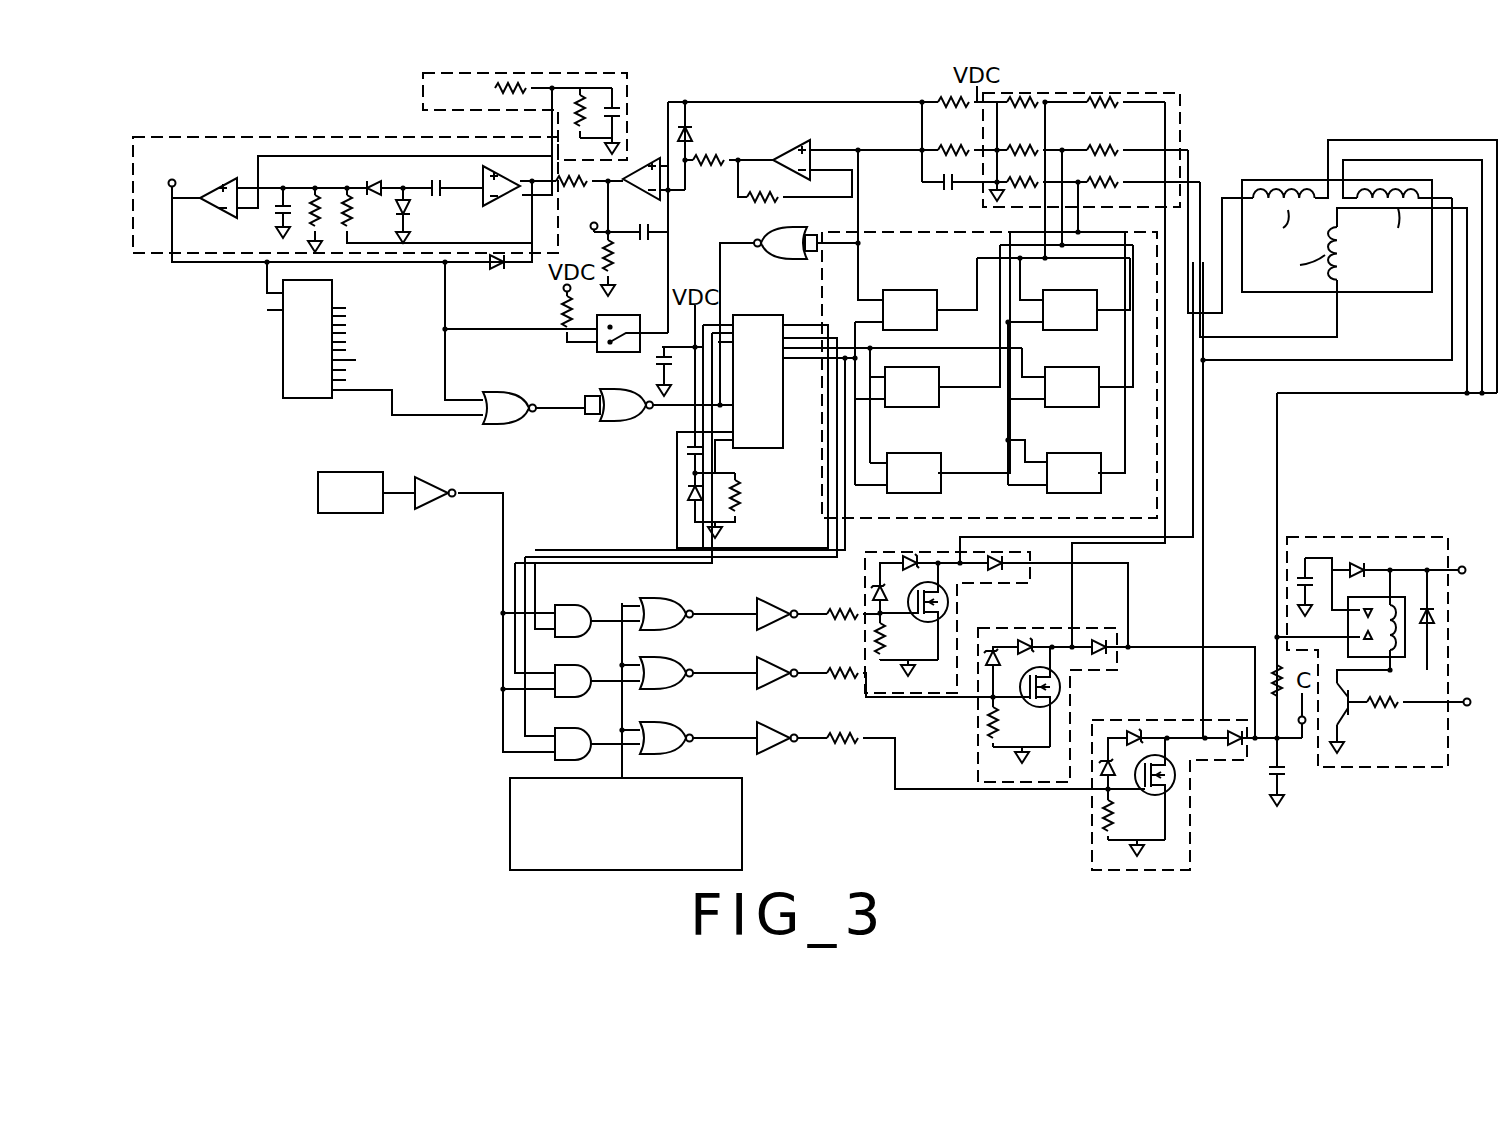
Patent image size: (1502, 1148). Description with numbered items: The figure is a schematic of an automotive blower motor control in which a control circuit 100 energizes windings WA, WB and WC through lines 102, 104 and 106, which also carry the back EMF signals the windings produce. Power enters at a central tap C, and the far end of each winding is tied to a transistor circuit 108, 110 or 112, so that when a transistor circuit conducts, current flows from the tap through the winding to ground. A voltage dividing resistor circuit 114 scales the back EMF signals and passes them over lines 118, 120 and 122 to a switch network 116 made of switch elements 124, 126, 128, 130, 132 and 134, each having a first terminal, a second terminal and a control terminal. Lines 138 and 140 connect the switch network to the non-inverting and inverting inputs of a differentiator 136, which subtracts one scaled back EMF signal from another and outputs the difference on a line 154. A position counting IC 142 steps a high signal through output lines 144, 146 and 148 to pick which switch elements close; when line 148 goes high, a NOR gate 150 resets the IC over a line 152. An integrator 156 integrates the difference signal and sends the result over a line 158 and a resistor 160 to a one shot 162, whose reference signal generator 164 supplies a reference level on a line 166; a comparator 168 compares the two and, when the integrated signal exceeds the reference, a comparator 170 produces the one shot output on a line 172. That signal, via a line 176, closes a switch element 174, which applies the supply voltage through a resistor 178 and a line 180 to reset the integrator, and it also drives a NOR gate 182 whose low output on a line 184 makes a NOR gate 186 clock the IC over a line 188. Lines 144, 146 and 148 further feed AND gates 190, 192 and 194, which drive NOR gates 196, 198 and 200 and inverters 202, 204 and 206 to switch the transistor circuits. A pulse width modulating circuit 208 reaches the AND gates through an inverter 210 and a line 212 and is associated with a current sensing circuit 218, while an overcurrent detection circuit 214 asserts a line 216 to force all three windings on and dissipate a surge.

The control circuit 100 is at (1312, 840).
The line 102 is at (1193, 393).
The line 104 is at (1203, 422).
The line 106 is at (1205, 455).
The transistor circuit 108 is at (975, 584).
The transistor circuit 110 is at (1091, 670).
The transistor circuit 112 is at (1190, 820).
The voltage dividing resistor circuit 114 is at (1180, 107).
The switch network 116 is at (874, 223).
The line 118 is at (1043, 213).
The line 120 is at (1043, 224).
The line 122 is at (1080, 222).
The switch element 124 is at (937, 325).
The switch element 126 is at (939, 402).
The switch element 128 is at (941, 488).
The switch element 130 is at (1070, 330).
The switch element 132 is at (1095, 405).
The switch element 134 is at (1098, 490).
The differentiator 136 is at (788, 138).
The line 138 is at (825, 160).
The line 140 is at (836, 152).
The position counting IC 142 is at (768, 448).
The output line 144 is at (800, 347).
The output line 146 is at (805, 333).
The output line 148 is at (807, 402).
The NOR gate 150 is at (784, 230).
The line 152 is at (704, 256).
The line 154 is at (748, 140).
The integrator 156 is at (648, 160).
The line 158 is at (636, 190).
The resistor 160 is at (581, 201).
The one shot 162 is at (165, 137).
The reference signal generator 164 is at (422, 88).
The line 166 is at (556, 120).
The comparator 168 is at (487, 198).
The comparator 170 is at (232, 222).
The line 172 is at (226, 266).
The switch element 174 is at (635, 354).
The line 176 is at (495, 310).
The resistor 178 is at (562, 294).
The line 180 is at (668, 257).
The NOR gate 182 is at (503, 391).
The line 184 is at (550, 403).
The NOR gate 186 is at (603, 425).
The line 188 is at (649, 414).
The AND gate 190 is at (580, 605).
The AND gate 192 is at (590, 670).
The AND gate 194 is at (590, 732).
The NOR gate 196 is at (668, 598).
The NOR gate 198 is at (668, 658).
The NOR gate 200 is at (674, 726).
The inverter 202 is at (779, 598).
The inverter 204 is at (779, 658).
The inverter 206 is at (779, 726).
The pulse width modulating circuit 208 is at (332, 472).
The inverter 210 is at (440, 478).
The line 212 is at (513, 509).
The overcurrent detection circuit 214 is at (508, 812).
The line 216 is at (622, 770).
The circuit 218 is at (1345, 537).